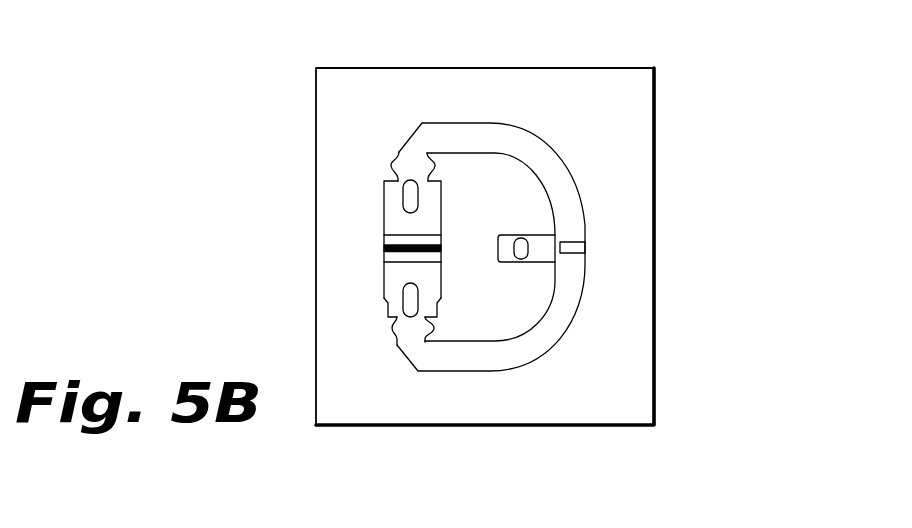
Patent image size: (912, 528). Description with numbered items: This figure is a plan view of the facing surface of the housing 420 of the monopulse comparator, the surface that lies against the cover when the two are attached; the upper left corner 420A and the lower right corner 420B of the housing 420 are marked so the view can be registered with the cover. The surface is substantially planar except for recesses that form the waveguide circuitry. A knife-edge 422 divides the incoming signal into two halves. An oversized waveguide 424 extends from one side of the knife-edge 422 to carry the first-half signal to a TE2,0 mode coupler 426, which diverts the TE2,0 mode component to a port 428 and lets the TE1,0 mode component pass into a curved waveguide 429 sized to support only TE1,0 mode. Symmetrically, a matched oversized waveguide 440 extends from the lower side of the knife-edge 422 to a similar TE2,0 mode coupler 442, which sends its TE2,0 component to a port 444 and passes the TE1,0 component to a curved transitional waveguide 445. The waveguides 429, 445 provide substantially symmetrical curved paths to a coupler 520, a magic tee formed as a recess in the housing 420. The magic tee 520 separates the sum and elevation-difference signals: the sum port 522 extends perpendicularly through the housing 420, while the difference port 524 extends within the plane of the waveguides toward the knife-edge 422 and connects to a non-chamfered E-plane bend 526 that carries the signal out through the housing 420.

The housing 420 is at (486, 255).
The upper left corner of housing 420A is at (316, 68).
The lower right corner of housing 420B is at (654, 425).
The curved waveguide 429 is at (445, 123).
The port 428 is at (411, 179).
The TE2,0 mode coupler 426 is at (379, 177).
The oversized waveguide 424 is at (385, 214).
The knife-edge 422 is at (410, 249).
The oversized waveguide 440 is at (442, 275).
The TE2,0 mode coupler 442 is at (378, 320).
The port 444 is at (410, 318).
The curved transitional waveguide 445 is at (488, 320).
The difference port 524 is at (673, 303).
The E-plane bend 526 is at (528, 257).
The sum port 522 is at (677, 243).
The coupler (magic tee) 520 is at (596, 250).